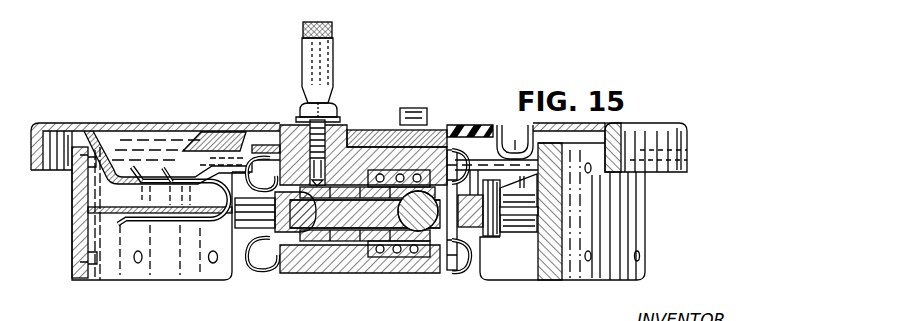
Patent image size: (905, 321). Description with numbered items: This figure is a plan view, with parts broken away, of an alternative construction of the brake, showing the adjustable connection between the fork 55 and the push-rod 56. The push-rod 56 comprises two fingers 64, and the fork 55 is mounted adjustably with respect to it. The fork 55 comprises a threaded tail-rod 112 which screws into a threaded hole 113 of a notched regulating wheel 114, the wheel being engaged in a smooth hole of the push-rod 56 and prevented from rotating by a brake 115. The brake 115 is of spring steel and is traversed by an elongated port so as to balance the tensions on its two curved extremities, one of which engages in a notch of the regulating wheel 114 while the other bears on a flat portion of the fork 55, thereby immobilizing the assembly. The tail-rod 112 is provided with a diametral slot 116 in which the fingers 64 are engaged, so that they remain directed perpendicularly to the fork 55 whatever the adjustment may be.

The fork 55 is at (530, 247).
The push-rod 56 is at (440, 218).
The fingers 64 is at (452, 180).
The threaded tail-rod 112 is at (450, 250).
The threaded hole 113 is at (417, 183).
The notched regulating wheel 114 is at (458, 233).
The brake 115 is at (500, 188).
The diametral slot 116 is at (443, 228).